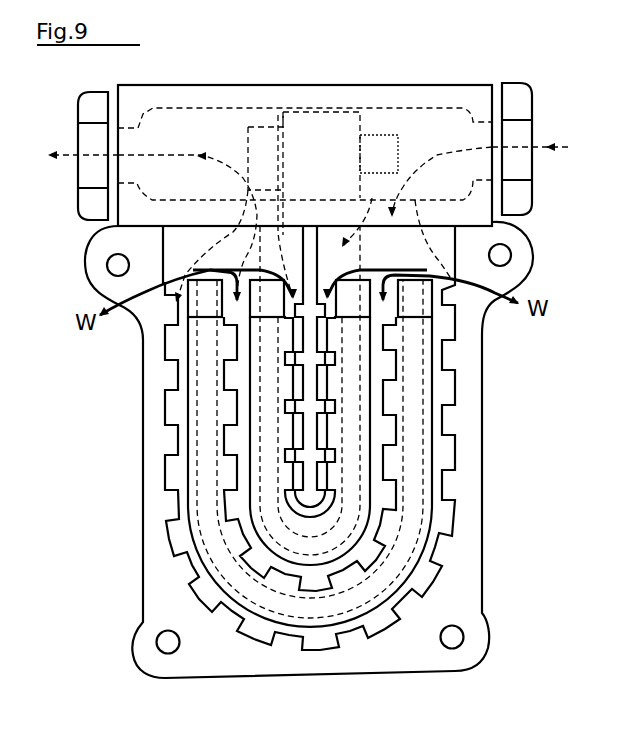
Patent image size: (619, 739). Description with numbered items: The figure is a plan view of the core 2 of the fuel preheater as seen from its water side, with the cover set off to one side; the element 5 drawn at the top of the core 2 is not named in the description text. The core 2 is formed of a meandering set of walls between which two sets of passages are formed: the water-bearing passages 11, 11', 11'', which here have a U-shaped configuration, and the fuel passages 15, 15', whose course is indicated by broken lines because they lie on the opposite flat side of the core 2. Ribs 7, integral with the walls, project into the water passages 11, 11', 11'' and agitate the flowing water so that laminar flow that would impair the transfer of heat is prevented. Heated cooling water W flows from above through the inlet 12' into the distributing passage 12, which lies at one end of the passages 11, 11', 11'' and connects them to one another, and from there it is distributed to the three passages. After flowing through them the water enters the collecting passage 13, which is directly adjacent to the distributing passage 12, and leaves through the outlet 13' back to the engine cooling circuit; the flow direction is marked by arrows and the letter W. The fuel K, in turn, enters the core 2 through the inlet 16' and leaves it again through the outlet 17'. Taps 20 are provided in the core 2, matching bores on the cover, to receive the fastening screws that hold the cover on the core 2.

The core 2 is at (120, 562).
The inlet housing 5 is at (323, 130).
The ribs 7 is at (387, 378).
The passage 11 is at (253, 438).
The passage 11' is at (238, 454).
The passage 11'' is at (208, 371).
The distributing passage 12 is at (234, 288).
The inlet 12' is at (203, 277).
The collecting passage 13 is at (486, 264).
The outlet 13' is at (490, 224).
The fuel passage 15 is at (251, 449).
The fuel passage 15' is at (221, 390).
The inlet 16' is at (544, 149).
The outlet connection 17' is at (76, 166).
The taps 20 is at (167, 642).